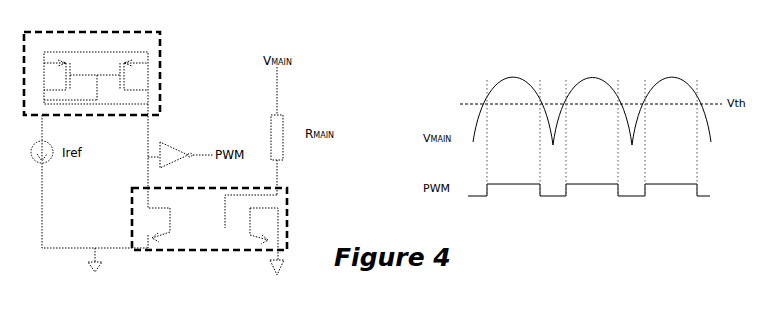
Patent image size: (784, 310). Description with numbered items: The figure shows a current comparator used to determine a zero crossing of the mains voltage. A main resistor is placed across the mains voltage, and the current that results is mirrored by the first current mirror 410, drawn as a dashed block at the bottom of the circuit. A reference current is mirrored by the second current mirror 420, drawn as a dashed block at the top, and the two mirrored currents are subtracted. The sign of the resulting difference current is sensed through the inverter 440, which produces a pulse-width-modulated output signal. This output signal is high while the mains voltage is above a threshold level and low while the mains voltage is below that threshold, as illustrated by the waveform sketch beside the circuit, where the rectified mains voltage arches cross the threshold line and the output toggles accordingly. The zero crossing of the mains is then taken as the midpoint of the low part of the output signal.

The first current mirror 410 is at (237, 245).
The second current mirror 420 is at (158, 40).
The inverter 440 is at (165, 153).